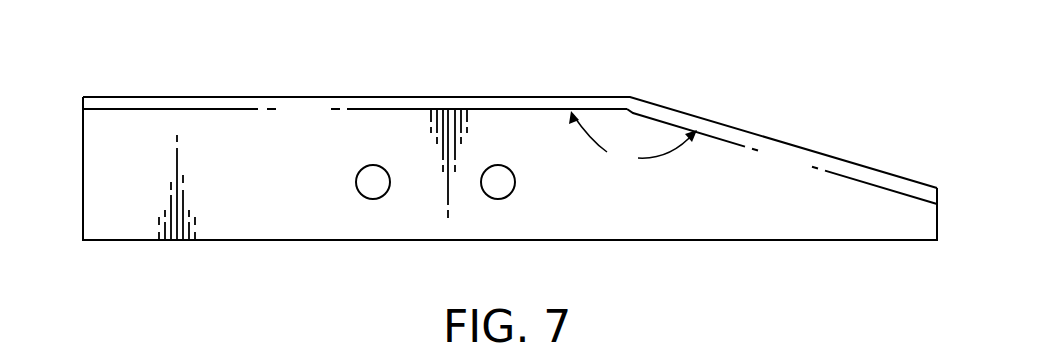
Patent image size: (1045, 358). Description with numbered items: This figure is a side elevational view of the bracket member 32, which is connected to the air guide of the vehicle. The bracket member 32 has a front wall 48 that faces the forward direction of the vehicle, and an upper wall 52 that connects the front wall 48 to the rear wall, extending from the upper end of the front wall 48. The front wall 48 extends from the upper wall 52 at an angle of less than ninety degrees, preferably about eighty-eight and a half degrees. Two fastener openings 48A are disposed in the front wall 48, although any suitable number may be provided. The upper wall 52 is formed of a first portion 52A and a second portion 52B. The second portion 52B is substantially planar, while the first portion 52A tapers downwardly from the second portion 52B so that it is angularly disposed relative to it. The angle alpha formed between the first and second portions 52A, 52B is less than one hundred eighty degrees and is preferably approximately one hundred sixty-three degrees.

The bracket member 32 is at (83, 208).
The front wall 48 is at (720, 202).
The fastener opening 48A is at (373, 199).
The upper wall 52 is at (217, 97).
The first portion 52A is at (783, 142).
The second portion 52B is at (413, 97).